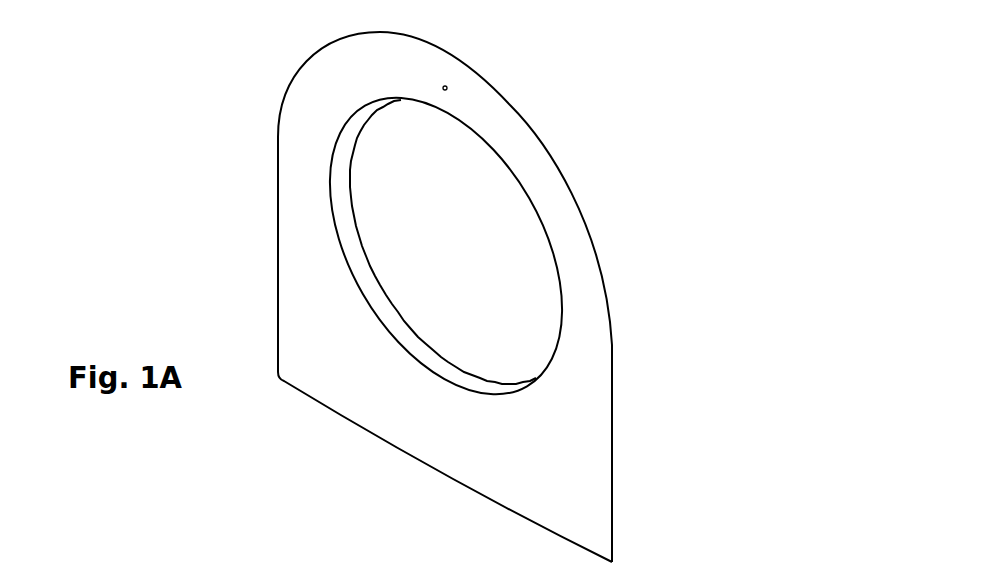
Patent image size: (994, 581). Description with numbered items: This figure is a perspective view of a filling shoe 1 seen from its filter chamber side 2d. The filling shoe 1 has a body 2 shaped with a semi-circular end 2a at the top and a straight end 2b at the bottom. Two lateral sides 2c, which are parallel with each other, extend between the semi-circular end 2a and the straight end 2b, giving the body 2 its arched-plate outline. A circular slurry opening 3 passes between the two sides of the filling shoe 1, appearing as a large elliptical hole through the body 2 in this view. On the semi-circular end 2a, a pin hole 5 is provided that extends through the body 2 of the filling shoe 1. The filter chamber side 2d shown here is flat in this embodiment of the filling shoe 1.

The filling shoe 1 is at (200, 103).
The body 2 is at (300, 310).
The semi-circular end 2a is at (457, 60).
The straight end 2b is at (345, 418).
The lateral sides 2c is at (277, 252).
The filter chamber side 2d is at (585, 475).
The circular slurry opening 3 is at (508, 200).
The pin hole 5 is at (445, 88).